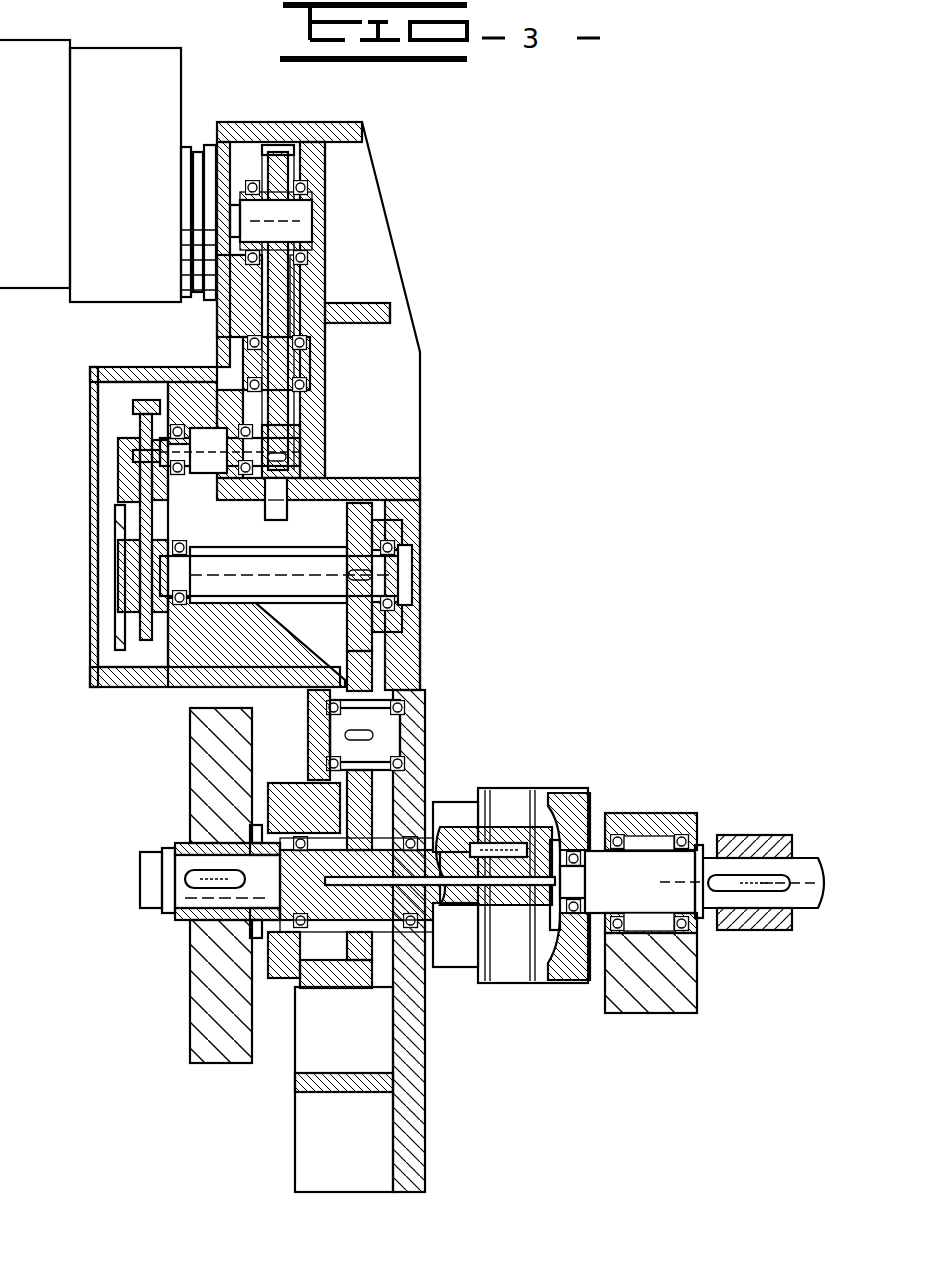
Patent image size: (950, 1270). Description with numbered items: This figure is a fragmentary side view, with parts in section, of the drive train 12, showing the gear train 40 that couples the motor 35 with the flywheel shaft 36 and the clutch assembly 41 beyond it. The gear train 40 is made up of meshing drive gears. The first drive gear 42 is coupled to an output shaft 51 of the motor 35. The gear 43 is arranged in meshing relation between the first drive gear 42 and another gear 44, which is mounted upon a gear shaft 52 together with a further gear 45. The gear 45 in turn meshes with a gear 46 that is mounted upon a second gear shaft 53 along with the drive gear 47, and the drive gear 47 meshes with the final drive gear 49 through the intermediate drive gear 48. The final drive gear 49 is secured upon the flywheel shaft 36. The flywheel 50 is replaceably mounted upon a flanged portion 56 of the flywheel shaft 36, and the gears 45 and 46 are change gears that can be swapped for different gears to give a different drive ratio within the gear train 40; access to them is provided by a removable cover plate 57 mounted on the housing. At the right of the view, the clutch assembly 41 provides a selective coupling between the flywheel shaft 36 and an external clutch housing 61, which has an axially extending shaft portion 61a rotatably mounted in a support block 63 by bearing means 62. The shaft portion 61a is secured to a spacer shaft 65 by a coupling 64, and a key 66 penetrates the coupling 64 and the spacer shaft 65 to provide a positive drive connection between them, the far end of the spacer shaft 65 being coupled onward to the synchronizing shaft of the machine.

The motor 35 is at (128, 150).
The drive train 12 is at (436, 290).
The first drive gear 42 is at (284, 180).
The output shaft 51 is at (300, 218).
The gear 43 is at (283, 410).
The gear train 40 is at (345, 384).
The gear 44 is at (273, 505).
The gear shaft 52 is at (226, 475).
The gear 45 is at (134, 424).
The gear 46 is at (118, 632).
The gear shaft 53 is at (256, 594).
The drive gear 47 is at (370, 523).
The drive gear 48 is at (365, 667).
The removable cover plate 57 is at (92, 596).
The flywheel 50 is at (200, 810).
The flywheel shaft 36 is at (150, 878).
The flanged portion 56 is at (190, 915).
The final drive gear 49 is at (354, 955).
The clutch assembly 41 is at (527, 775).
The clutch housing 61 is at (573, 795).
The shaft portion 61a is at (650, 893).
The bearing means 62 is at (672, 820).
The support block 63 is at (688, 990).
The coupling 64 is at (775, 836).
The spacer shaft 65 is at (806, 910).
The key 66 is at (742, 892).